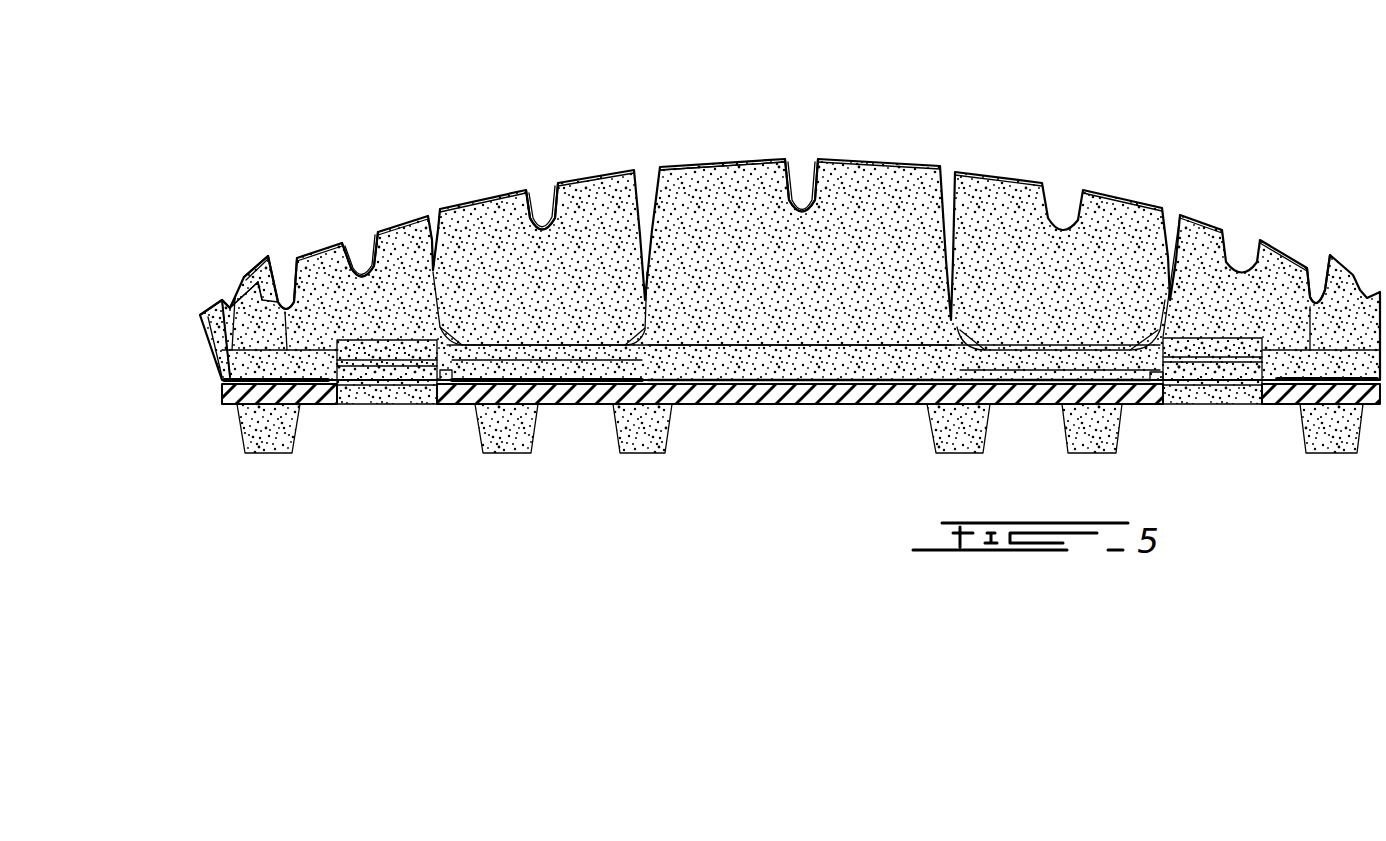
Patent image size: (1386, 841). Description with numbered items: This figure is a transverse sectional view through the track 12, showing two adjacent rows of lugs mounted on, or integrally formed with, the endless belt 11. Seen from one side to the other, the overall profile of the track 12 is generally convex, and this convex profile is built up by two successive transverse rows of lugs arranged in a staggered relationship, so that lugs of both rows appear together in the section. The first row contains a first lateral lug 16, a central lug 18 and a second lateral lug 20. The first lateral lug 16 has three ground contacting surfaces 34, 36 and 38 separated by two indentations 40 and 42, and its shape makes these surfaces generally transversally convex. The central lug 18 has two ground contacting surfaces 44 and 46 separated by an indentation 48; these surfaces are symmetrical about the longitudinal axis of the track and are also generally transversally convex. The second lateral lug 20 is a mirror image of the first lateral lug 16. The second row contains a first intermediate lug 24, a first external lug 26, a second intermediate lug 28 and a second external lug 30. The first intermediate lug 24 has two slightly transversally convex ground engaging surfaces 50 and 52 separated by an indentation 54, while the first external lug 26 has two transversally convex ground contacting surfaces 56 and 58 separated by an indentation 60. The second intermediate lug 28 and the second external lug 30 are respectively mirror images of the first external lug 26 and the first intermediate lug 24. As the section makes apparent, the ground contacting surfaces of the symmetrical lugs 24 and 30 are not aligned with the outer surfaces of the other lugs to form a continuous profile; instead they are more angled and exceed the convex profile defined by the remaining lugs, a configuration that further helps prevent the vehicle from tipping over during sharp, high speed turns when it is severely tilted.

The endless belt 11 is at (777, 397).
The track 12 is at (227, 221).
The first lateral lug 16 is at (432, 212).
The central lug 18 is at (707, 213).
The second lateral lug 20 is at (1193, 293).
The first intermediate lug 24 is at (262, 280).
The first external lug 26 is at (502, 220).
The second intermediate lug 28 is at (1010, 227).
The second external lug 30 is at (1313, 283).
The ground contacting surface 34 is at (233, 297).
The ground contacting surface 36 is at (313, 244).
The ground contacting surface 38 is at (402, 215).
The indentation 40 is at (289, 258).
The indentation 42 is at (363, 268).
The ground contacting surface 44 is at (750, 163).
The ground contacting surface 46 is at (885, 165).
The indentation 48 is at (816, 190).
The ground contacting surface 50 is at (200, 313).
The ground contacting surface 52 is at (245, 280).
The indentation 54 is at (223, 307).
The ground contacting surface 56 is at (483, 197).
The ground contacting surface 58 is at (610, 178).
The indentation 60 is at (542, 220).